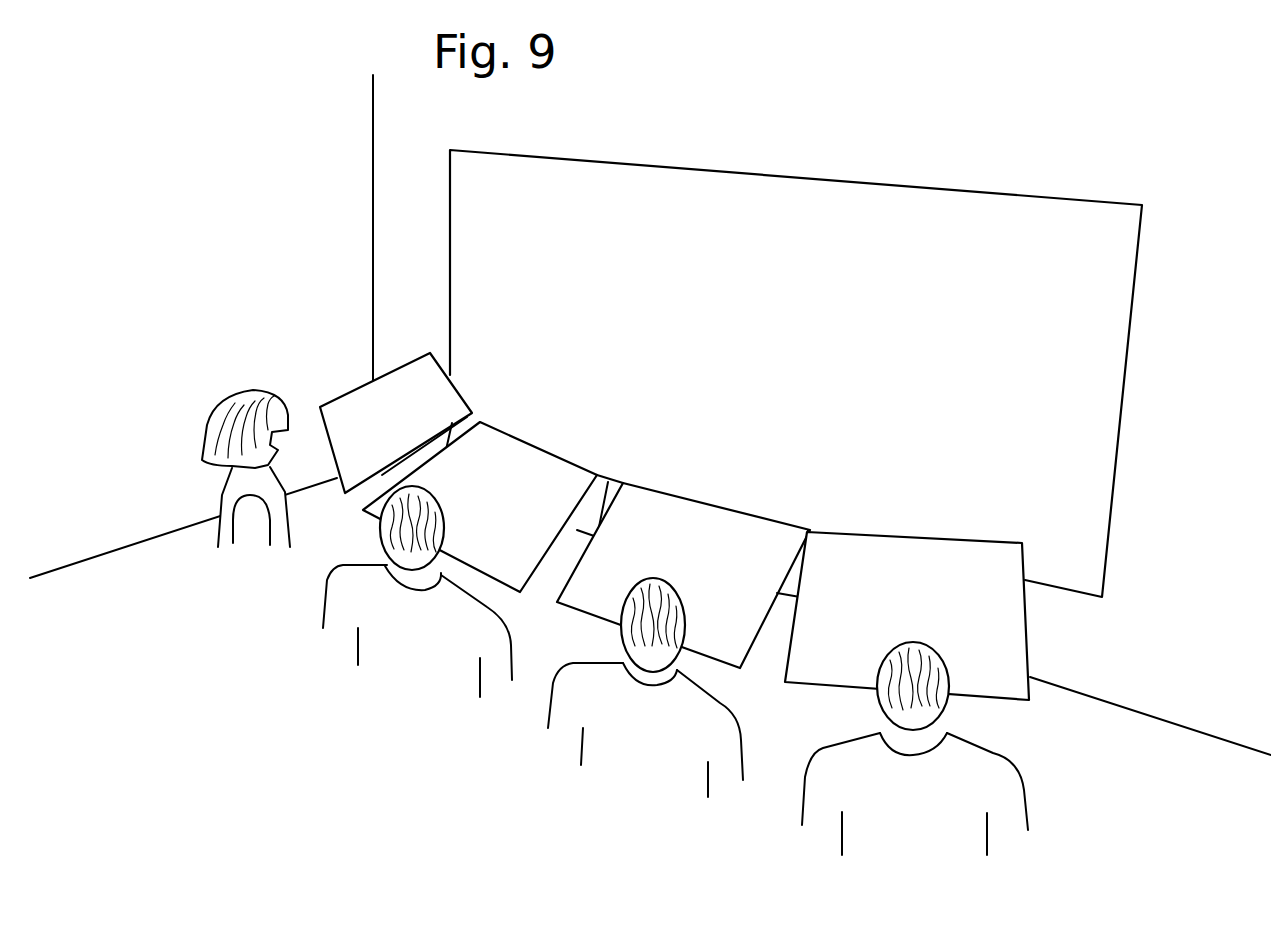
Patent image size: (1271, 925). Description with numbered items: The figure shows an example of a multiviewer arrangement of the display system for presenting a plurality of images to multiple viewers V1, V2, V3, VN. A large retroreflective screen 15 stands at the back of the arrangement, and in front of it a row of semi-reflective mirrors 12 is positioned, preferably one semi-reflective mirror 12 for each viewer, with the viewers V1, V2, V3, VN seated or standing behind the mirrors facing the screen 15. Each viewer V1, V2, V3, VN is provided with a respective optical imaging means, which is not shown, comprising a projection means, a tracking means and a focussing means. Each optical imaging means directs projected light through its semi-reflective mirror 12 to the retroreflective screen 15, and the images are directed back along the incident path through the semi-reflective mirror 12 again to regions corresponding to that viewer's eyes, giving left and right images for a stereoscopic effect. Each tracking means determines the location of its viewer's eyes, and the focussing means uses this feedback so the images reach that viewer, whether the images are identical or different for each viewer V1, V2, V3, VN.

The retroreflective screen 15 is at (878, 180).
The semi-reflective mirror 12 is at (1027, 645).
The viewer V1 is at (208, 468).
The viewer V2 is at (417, 598).
The viewer V3 is at (645, 691).
The viewer VN is at (915, 766).